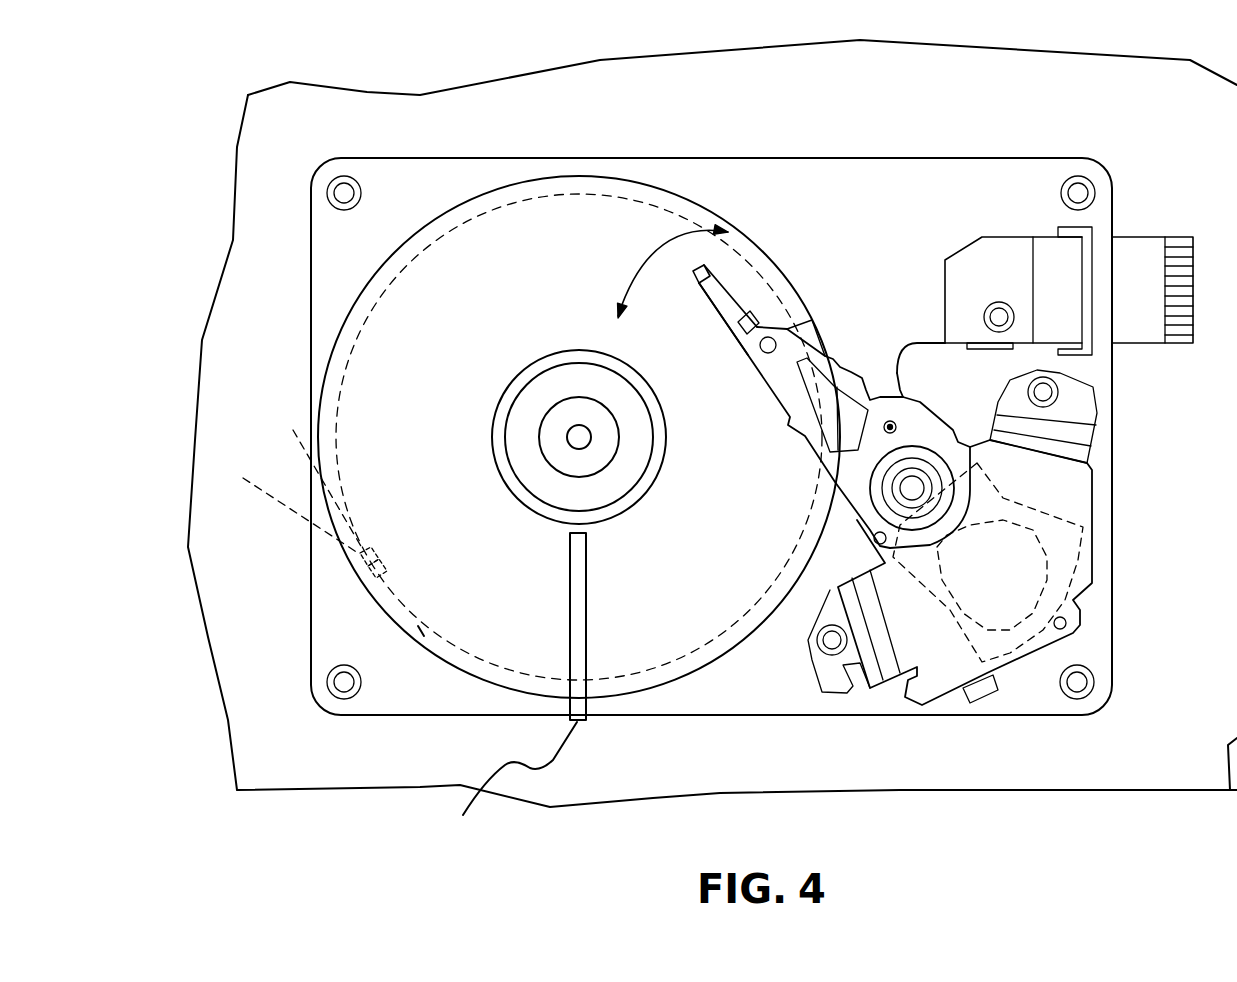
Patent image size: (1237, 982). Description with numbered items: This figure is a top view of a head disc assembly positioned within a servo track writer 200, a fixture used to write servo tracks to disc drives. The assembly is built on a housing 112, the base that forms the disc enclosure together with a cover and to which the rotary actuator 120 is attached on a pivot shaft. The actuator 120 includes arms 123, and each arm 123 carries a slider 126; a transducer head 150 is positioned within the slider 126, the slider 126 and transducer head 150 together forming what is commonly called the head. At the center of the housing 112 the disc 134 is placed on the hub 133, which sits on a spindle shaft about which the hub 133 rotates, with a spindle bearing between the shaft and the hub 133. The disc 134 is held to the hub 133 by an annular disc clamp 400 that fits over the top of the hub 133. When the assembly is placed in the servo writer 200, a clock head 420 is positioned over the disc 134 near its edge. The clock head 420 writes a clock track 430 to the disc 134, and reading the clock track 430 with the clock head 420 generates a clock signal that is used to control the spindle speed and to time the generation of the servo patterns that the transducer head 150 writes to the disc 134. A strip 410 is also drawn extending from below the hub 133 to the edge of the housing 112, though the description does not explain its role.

The servo track writer 200 is at (419, 108).
The housing 112 is at (371, 708).
The disc 134 is at (357, 418).
The hub 133 is at (556, 362).
The disc clamp 400 is at (503, 465).
The strip / tab 410 is at (585, 733).
The clock track 430 is at (422, 632).
The clock head 420 is at (368, 560).
The transducer head 150 is at (698, 272).
The slider 126 is at (707, 272).
The arms 123 is at (787, 348).
The actuator 120 is at (857, 520).